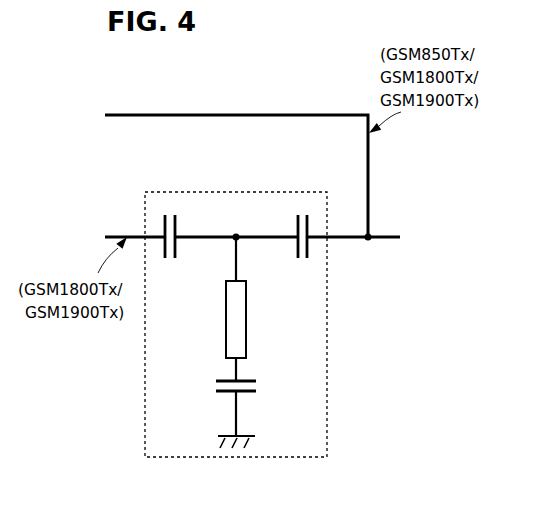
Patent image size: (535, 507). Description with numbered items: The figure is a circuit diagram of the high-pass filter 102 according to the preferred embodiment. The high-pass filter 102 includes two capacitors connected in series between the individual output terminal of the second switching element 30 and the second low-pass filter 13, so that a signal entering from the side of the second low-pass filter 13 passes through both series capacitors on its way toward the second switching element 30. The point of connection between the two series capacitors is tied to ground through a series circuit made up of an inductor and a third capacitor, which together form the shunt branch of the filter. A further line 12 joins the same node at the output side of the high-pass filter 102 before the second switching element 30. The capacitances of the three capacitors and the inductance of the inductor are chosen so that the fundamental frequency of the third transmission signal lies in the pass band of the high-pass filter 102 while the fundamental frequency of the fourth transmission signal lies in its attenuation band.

The first transmission signal path (GSM850Tx/GSM1800Tx/GSM1900Tx) 12 is at (86, 102).
The second low-pass filter 13 is at (86, 224).
The second switching element 30 is at (420, 222).
The high-pass filter 102 is at (313, 185).